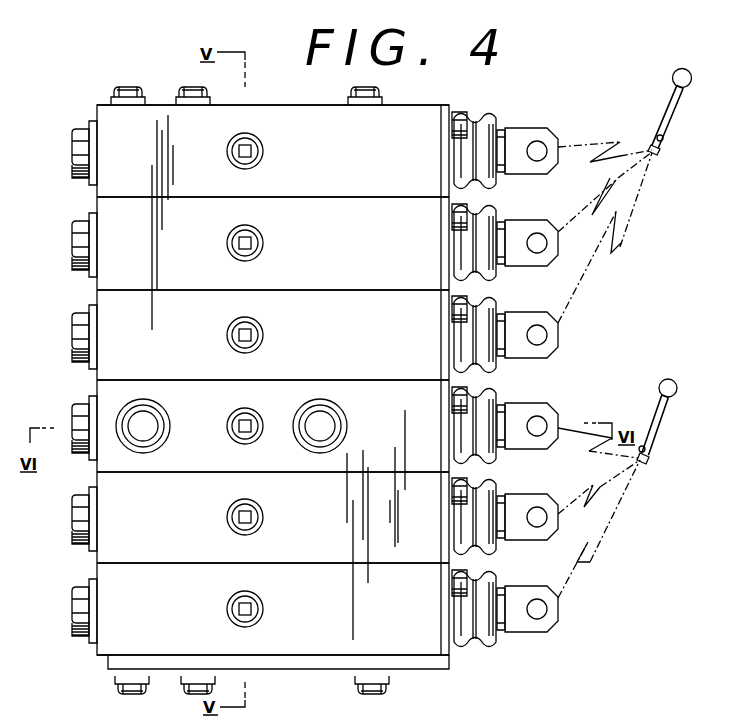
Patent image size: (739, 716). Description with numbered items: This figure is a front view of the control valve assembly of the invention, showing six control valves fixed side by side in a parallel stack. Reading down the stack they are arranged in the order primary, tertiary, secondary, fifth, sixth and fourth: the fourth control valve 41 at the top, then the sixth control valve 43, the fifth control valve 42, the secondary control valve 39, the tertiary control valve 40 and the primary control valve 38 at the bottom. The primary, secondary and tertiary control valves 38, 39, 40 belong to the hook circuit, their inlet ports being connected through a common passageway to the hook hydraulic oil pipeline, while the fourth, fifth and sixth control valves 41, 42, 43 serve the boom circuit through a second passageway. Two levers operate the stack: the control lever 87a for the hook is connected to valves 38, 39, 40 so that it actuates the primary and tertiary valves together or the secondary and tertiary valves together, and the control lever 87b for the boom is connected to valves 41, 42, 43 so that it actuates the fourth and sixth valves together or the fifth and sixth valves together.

The primary control valve 38 is at (305, 606).
The secondary control valve 39 is at (307, 422).
The tertiary control valve 40 is at (306, 516).
The fourth control valve 41 is at (310, 138).
The fifth control valve 42 is at (307, 331).
The sixth control valve 43 is at (306, 240).
The control lever for the hook 87a is at (617, 485).
The control lever for the boom 87b is at (625, 196).